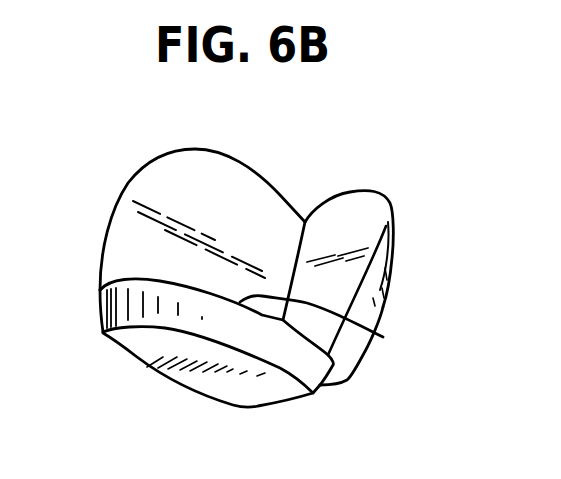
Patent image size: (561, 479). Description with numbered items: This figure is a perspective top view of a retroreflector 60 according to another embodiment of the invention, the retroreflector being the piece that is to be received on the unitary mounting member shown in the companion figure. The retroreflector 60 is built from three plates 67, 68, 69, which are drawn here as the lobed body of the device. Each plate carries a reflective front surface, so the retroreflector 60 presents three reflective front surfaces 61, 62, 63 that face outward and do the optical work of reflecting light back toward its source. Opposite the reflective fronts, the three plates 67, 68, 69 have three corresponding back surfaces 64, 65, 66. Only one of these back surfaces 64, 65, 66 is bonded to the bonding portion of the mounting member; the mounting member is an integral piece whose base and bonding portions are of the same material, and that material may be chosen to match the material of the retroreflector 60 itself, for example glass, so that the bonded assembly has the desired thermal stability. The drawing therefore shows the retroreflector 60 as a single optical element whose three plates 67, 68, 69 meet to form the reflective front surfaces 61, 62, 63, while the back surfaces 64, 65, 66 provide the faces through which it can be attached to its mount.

The retroreflector 60 is at (418, 269).
The reflective front surface 61 is at (363, 210).
The reflective front surface 62 is at (383, 337).
The reflective front surface 63 is at (228, 189).
The back surface 64 is at (393, 237).
The back surface 65 is at (142, 333).
The back surface 66 is at (117, 208).
The plate 67 is at (375, 309).
The plate 68 is at (297, 365).
The plate 69 is at (100, 266).